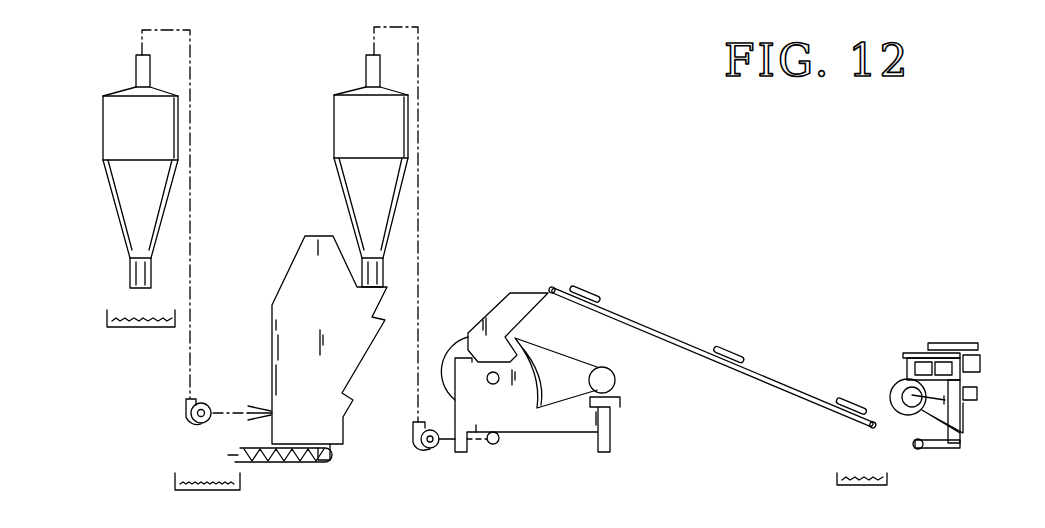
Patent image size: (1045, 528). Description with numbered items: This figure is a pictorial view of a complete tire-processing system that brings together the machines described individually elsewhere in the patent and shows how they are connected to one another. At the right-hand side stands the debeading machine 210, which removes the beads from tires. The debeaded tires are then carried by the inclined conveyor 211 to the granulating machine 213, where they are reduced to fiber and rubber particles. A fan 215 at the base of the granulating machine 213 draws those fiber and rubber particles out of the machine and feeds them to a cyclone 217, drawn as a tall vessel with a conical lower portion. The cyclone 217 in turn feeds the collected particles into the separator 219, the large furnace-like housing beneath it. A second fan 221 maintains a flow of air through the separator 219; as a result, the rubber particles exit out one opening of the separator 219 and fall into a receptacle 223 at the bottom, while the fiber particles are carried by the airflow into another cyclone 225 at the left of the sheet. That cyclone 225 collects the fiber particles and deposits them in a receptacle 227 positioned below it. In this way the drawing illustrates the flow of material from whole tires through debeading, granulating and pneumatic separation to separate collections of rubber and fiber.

The debeading machine 210 is at (938, 324).
The conveyor 211 is at (635, 324).
The granulating machine 213 is at (523, 433).
The fan 215 is at (420, 449).
The cyclone 217 is at (340, 134).
The separator 219 is at (296, 270).
The fan 221 is at (198, 400).
The receptacle 223 is at (240, 478).
The cyclone 225 is at (178, 130).
The receptacle 227 is at (163, 327).